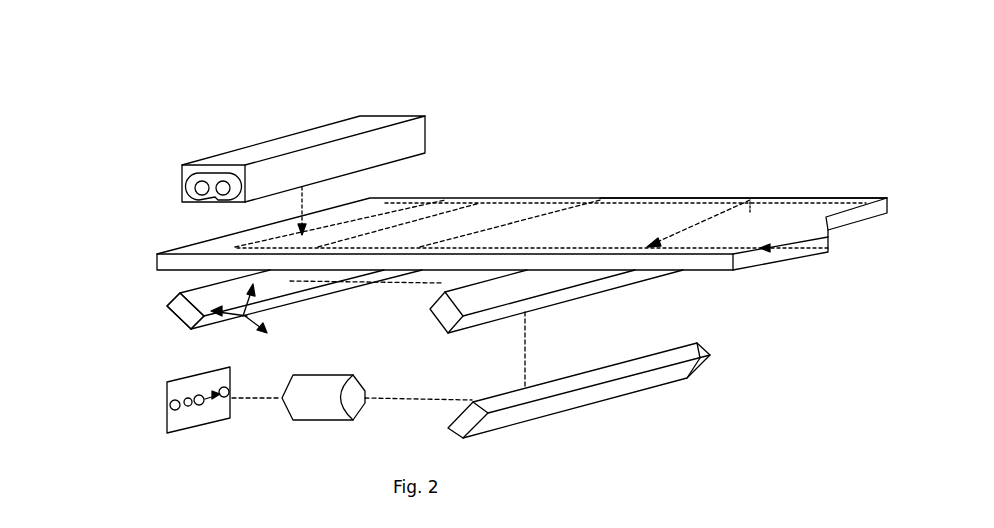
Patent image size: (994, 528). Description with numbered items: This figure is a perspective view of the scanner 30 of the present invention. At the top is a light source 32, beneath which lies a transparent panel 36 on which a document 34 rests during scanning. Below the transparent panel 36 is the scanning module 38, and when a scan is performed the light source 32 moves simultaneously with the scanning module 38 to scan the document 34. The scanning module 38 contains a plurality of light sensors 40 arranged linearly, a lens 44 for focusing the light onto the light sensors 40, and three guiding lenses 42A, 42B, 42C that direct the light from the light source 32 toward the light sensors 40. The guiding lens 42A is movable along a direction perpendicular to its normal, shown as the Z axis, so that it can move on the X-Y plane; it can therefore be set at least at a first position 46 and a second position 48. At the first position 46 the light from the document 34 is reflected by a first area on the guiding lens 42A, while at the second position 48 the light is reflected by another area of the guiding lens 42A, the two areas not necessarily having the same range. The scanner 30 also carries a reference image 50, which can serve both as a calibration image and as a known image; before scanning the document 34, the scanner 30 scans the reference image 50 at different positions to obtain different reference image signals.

The scanner 30 is at (688, 100).
The light source 32 is at (396, 114).
The document 34 is at (750, 200).
The transparent panel 36 is at (658, 198).
The scanning module 38 is at (134, 305).
The light sensors 40 is at (195, 410).
The guiding lens 42A is at (323, 298).
The guiding lens 42B is at (608, 290).
The guiding lens 42C is at (572, 410).
The lens 44 is at (317, 422).
The first position 46 is at (230, 325).
The second position 48 is at (176, 297).
The reference image 50 is at (434, 197).